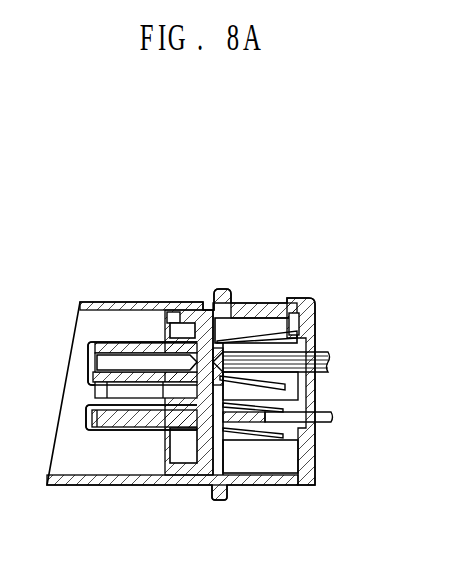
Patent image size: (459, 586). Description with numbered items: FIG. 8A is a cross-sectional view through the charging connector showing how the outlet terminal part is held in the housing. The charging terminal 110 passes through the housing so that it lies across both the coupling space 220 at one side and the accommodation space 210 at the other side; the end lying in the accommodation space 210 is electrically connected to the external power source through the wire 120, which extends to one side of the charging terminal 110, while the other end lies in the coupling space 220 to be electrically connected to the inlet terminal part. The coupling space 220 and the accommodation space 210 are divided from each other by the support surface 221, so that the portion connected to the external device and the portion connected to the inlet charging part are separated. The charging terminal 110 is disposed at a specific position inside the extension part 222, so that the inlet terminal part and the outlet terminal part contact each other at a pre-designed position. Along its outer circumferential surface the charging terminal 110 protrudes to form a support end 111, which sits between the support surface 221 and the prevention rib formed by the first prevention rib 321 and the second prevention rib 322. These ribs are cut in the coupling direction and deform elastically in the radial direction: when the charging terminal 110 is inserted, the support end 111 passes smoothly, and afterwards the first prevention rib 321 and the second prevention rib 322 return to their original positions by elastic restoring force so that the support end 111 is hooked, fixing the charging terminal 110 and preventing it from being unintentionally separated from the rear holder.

The charging terminal 110 is at (130, 347).
The support end 111 is at (220, 343).
The wire 120 is at (250, 352).
The accommodation space 210 is at (260, 452).
The coupling space 220 is at (112, 459).
The support surface 221 is at (213, 450).
The extension part 222 is at (110, 342).
The first prevention rib 321 is at (267, 336).
The second prevention rib 322 is at (300, 400).